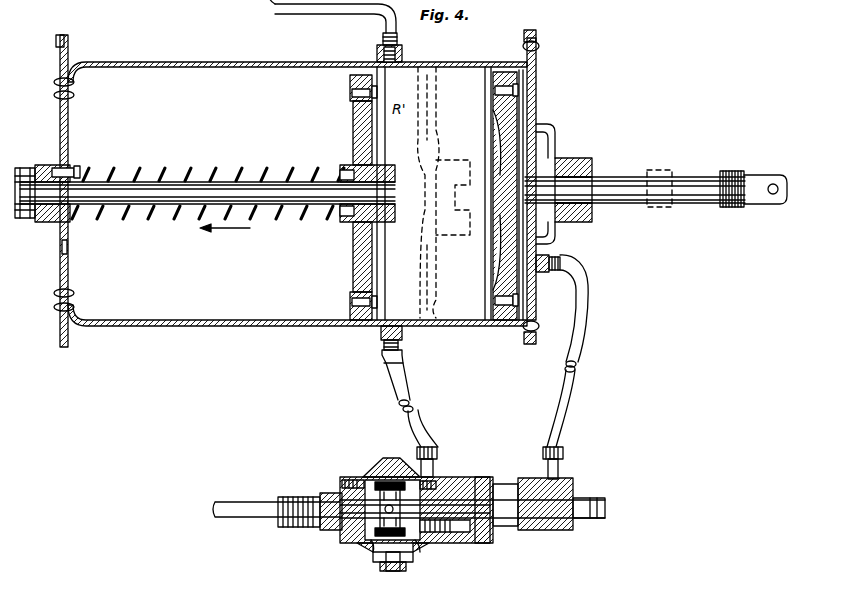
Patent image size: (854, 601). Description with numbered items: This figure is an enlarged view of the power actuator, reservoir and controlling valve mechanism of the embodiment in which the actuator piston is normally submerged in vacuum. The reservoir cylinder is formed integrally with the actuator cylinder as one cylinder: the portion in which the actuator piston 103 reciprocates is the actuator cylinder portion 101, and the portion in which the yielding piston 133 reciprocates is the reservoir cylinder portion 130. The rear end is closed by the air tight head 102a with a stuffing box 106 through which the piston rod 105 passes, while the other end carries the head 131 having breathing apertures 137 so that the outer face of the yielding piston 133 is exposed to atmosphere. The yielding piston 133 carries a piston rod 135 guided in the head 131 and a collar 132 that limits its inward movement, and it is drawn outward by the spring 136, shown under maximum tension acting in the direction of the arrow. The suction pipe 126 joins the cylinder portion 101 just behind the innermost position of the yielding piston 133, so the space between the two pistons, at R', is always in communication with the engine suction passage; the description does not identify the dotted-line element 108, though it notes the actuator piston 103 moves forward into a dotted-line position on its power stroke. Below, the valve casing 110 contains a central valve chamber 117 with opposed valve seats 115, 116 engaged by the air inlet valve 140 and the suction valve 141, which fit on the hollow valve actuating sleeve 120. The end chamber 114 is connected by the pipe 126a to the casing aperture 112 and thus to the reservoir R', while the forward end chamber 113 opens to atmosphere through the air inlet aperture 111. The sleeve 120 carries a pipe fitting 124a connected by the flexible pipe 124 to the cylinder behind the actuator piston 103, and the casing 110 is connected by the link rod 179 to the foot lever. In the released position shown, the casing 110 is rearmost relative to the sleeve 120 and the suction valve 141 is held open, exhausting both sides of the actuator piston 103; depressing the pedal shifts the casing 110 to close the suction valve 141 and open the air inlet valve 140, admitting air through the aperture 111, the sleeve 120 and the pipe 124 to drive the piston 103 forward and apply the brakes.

The actuator cylinder portion 101 is at (444, 62).
The air tight head 102a is at (537, 82).
The actuator piston 103 is at (508, 121).
The piston rod 105 is at (632, 204).
The stuffing box 106 is at (589, 159).
The piston rod (dashed) 108 is at (441, 137).
The valve casing 110 is at (371, 472).
The air inlet aperture 111 is at (351, 478).
The casing aperture 112 is at (441, 473).
The forward end chamber 113 is at (358, 543).
The end chamber 114 is at (431, 533).
The valve seat 115 is at (380, 560).
The valve seat 116 is at (416, 560).
The central valve chamber 117 is at (388, 574).
The hollow valve actuating sleeve 120 is at (500, 498).
The flexible pipe 124 is at (568, 387).
The pipe fitting 124a is at (566, 476).
The suction pipe 126 is at (305, 10).
The pipe 126a is at (396, 403).
The reservoir cylinder portion 130 is at (199, 62).
The head 131 is at (61, 128).
The collar 132 is at (22, 168).
The yielding piston 133 is at (356, 116).
The piston rod 135 is at (138, 207).
The spring 136 is at (213, 178).
The breathing aperture 137 is at (62, 247).
The air inlet valve 140 is at (371, 541).
The suction valve 141 is at (421, 545).
The link rod 179 is at (243, 518).